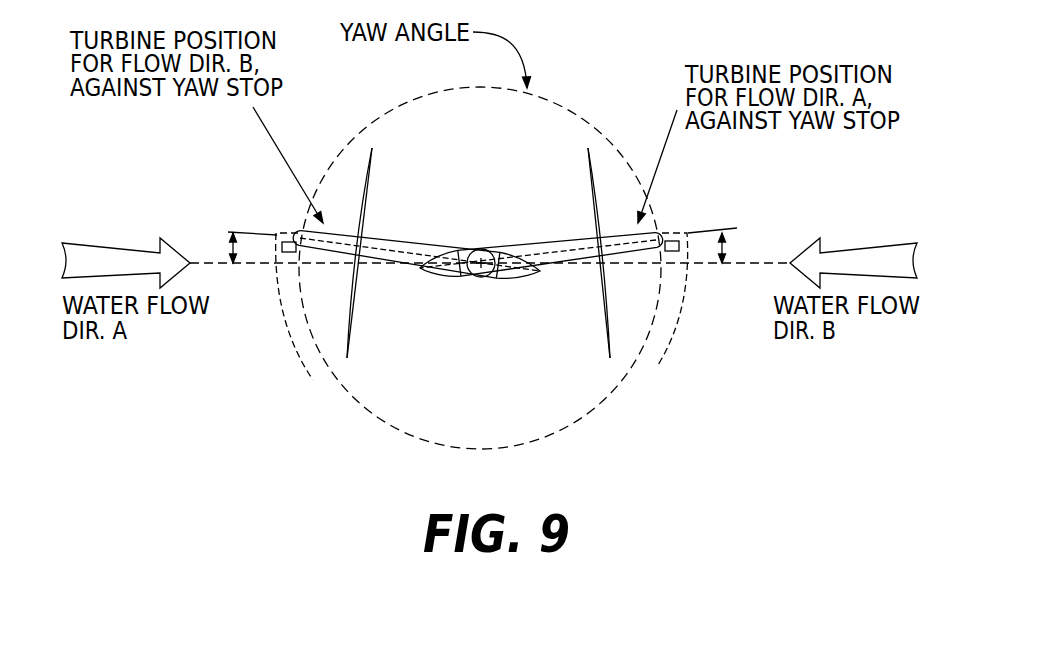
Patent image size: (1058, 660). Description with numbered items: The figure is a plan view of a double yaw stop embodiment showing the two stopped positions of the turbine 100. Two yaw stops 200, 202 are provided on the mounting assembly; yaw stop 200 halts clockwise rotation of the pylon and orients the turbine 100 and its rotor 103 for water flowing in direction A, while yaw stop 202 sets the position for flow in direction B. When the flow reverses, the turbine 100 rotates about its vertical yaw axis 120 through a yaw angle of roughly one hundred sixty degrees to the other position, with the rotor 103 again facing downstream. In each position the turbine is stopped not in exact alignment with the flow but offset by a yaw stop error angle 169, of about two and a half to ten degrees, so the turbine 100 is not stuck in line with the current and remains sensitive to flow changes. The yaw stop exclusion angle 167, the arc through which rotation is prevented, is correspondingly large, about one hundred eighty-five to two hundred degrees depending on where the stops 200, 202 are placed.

The turbine 100 is at (388, 230).
The rotor 103 is at (350, 330).
The vertical yaw axis 120 is at (481, 278).
The yaw stop exclusion angle 167 is at (280, 315).
The yaw stop error angle 169 is at (232, 250).
The yaw stop 200 is at (672, 252).
The yaw stop 202 is at (288, 241).